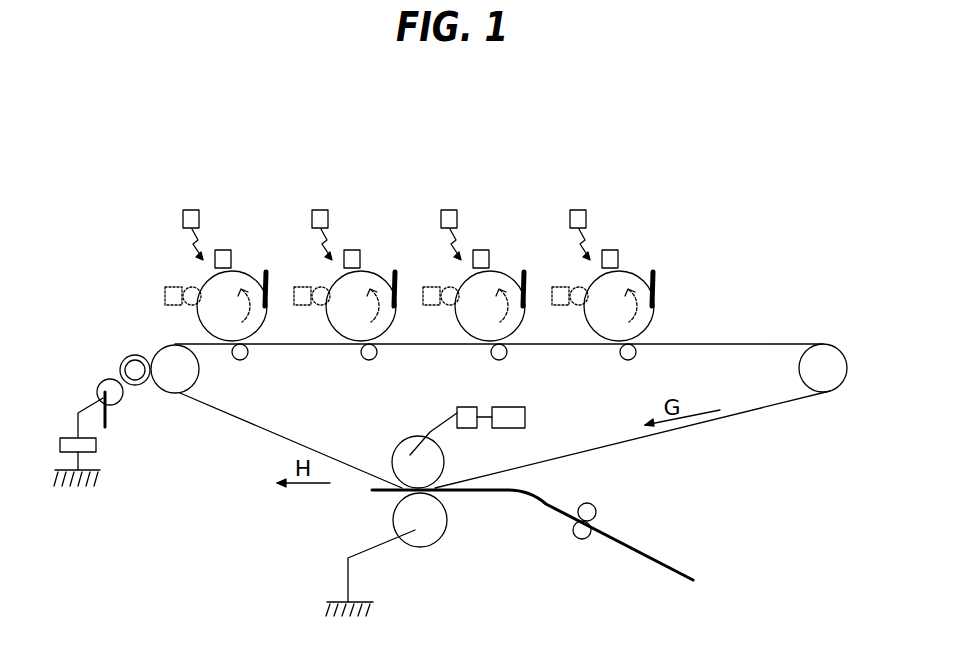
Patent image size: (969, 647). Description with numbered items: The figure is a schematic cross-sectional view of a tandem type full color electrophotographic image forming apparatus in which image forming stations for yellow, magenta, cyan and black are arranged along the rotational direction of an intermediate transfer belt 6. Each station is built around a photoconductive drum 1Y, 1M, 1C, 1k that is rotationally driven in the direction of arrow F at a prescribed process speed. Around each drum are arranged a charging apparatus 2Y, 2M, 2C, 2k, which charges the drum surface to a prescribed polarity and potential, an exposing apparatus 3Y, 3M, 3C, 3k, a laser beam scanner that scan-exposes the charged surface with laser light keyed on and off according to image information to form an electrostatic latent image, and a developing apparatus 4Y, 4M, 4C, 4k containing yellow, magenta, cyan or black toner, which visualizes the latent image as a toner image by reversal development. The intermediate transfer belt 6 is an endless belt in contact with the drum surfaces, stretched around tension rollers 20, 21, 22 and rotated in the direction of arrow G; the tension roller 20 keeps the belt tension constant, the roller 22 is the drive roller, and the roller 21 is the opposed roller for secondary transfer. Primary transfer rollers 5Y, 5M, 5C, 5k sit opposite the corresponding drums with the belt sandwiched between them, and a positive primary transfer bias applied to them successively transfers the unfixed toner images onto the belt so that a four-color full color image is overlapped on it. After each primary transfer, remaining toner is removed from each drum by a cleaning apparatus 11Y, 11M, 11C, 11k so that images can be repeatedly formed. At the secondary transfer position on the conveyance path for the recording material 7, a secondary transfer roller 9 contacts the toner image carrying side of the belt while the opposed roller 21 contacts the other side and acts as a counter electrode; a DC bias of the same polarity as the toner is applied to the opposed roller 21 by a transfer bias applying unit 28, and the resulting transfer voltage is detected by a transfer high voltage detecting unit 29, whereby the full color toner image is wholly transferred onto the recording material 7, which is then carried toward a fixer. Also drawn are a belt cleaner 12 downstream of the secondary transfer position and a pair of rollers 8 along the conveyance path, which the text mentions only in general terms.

The photoconductive drum 1Y is at (232, 303).
The photoconductive drum 1M is at (361, 303).
The photoconductive drum 1C is at (490, 303).
The photoconductive drum 1k is at (619, 303).
The charging apparatus 2Y is at (224, 248).
The charging apparatus 2M is at (353, 248).
The charging apparatus 2C is at (482, 248).
The charging apparatus 2k is at (610, 248).
The exposing apparatus 3Y is at (190, 208).
The exposing apparatus 3M is at (319, 208).
The exposing apparatus 3C is at (448, 208).
The exposing apparatus 3k is at (577, 208).
The developing apparatus 4Y is at (180, 286).
The developing apparatus 4M is at (309, 286).
The developing apparatus 4C is at (438, 286).
The developing apparatus 4k is at (567, 286).
The primary transfer roller 5Y is at (236, 358).
The primary transfer roller 5M is at (365, 358).
The primary transfer roller 5C is at (493, 358).
The primary transfer roller 5k is at (622, 358).
The cleaning apparatus 11Y is at (266, 274).
The cleaning apparatus 11M is at (395, 274).
The cleaning apparatus 11C is at (524, 274).
The cleaning apparatus 11k is at (654, 274).
The intermediate transfer belt 6 is at (773, 407).
The recording material 7 is at (543, 503).
The registration roller pair 8 is at (578, 537).
The secondary transfer roller 9 is at (393, 516).
The belt cleaning device 12 is at (107, 333).
The tension roller 20 is at (832, 344).
The opposed roller 21 is at (395, 452).
The drive roller 22 is at (157, 348).
The transfer bias applying unit 28 is at (518, 407).
The transfer high voltage detecting unit 29 is at (466, 407).